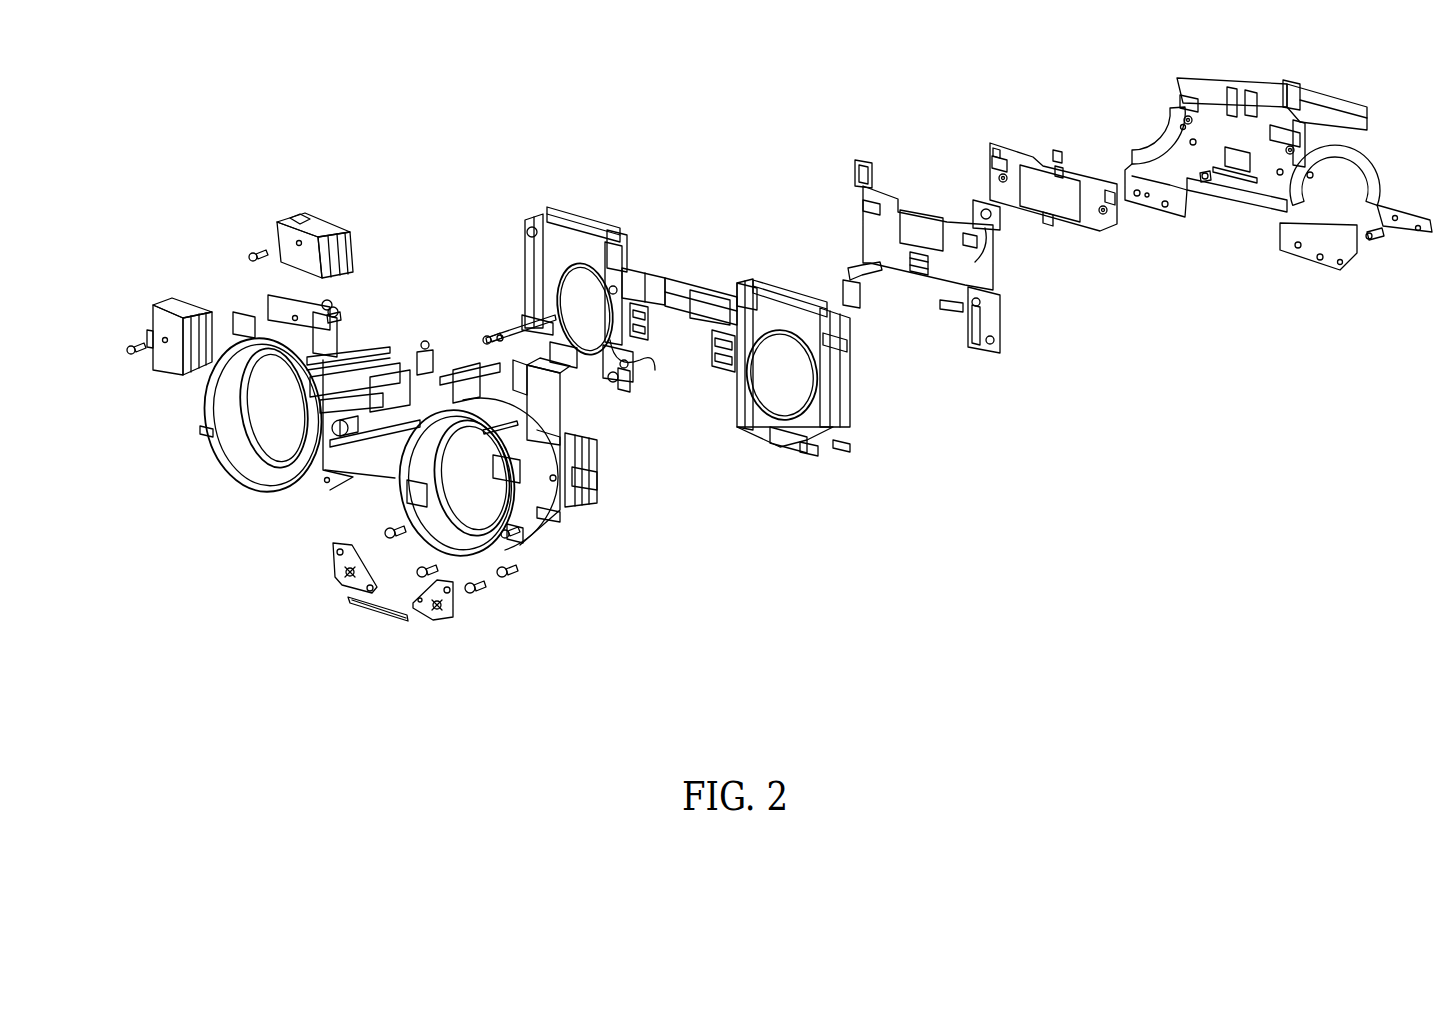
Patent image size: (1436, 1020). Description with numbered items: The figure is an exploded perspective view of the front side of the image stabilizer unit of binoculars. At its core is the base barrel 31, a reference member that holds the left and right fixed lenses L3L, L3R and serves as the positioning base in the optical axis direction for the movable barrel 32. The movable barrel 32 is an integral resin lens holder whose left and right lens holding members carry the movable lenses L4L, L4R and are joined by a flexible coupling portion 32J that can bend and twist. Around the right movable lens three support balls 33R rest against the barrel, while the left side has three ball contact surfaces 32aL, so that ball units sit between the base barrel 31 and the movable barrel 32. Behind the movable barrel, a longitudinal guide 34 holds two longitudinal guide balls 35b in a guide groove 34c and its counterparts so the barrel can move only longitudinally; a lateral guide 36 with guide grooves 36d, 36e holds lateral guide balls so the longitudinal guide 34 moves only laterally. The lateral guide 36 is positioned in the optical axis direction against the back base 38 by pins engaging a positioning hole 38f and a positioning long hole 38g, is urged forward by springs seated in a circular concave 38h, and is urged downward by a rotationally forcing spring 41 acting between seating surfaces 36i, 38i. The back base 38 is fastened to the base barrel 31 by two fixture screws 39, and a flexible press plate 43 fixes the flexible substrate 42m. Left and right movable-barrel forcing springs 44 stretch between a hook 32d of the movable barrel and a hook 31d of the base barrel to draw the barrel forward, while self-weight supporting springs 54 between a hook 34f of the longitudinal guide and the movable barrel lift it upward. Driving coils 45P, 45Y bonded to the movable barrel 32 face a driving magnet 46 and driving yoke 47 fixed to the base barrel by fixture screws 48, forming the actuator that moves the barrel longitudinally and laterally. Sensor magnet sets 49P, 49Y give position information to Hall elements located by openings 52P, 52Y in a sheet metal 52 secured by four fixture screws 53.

The base barrel 31 is at (283, 490).
The hook 31d is at (205, 432).
The right fixed lens L3R is at (287, 428).
The left fixed lens L3L is at (463, 463).
The right movable lens L4R is at (573, 317).
The left movable lens L4L is at (800, 383).
The movable barrel 32 is at (663, 287).
The coupling portion 32J is at (703, 307).
The hook 32d is at (520, 325).
The ball contact surfaces 32aL is at (705, 300).
The support balls 33R is at (532, 232).
The longitudinal guide 34 is at (913, 217).
The guide groove 34c is at (853, 177).
The hook 34f is at (963, 303).
The longitudinal guide balls 35b is at (1000, 227).
The lateral guide 36 is at (1005, 143).
The guide groove 36d is at (990, 153).
The guide groove 36e is at (1053, 227).
The seating surface 36i is at (1060, 178).
The back base 38 is at (1270, 187).
The positioning hole 38f is at (1310, 173).
The positioning long hole 38g is at (1183, 127).
The circular concave 38h is at (1173, 113).
The seating surface 38i is at (1237, 97).
The fixture screws 39 is at (1200, 187).
The rotationally forcing spring 41 is at (1055, 150).
The flexible substrate 42m is at (1317, 97).
The flexible press plate 43 is at (1287, 87).
The movable-barrel forcing springs 44 is at (500, 338).
The driving coils 45Y is at (528, 252).
The driving coils 45P is at (580, 217).
The driving magnet 46 is at (172, 298).
The driving yoke 47 is at (337, 233).
The fixture screws 48 is at (255, 250).
The sensor magnet set 49Y is at (653, 340).
The sensor magnet set 49P is at (703, 373).
The sheet metal 52 is at (405, 625).
The opening 52Y is at (350, 588).
The opening 52P is at (445, 618).
The fixture screws 53 is at (392, 540).
The self-weight supporting springs 54 is at (622, 380).